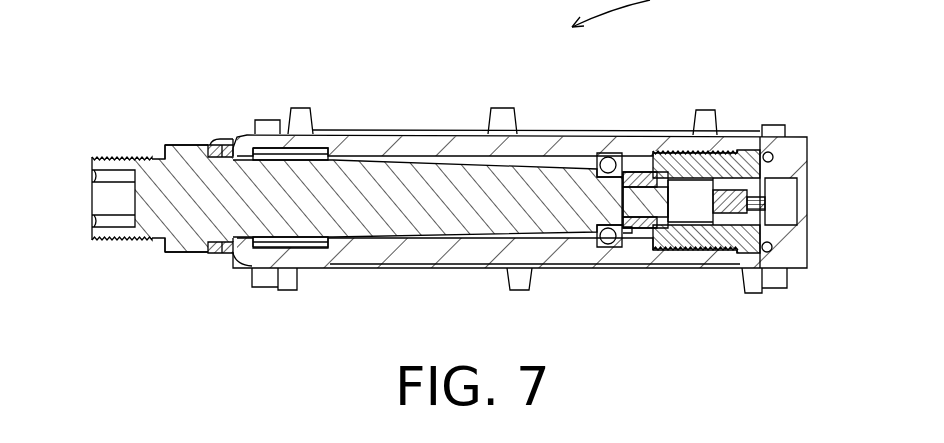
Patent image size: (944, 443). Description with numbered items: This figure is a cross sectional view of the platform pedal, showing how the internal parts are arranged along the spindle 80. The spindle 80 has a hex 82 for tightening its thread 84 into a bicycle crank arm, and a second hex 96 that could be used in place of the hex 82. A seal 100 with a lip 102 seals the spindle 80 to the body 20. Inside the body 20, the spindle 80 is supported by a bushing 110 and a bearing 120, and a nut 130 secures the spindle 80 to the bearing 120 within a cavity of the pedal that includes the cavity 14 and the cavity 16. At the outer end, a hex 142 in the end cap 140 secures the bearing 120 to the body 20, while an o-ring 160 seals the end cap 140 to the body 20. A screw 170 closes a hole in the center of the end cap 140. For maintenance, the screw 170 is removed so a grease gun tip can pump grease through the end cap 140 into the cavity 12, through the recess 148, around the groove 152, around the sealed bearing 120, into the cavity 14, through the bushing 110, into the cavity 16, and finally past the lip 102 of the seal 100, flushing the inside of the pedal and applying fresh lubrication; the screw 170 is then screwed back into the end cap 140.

The cavity 12 is at (693, 228).
The cavity 14 is at (515, 237).
The cavity 16 is at (247, 242).
The body 20 is at (443, 143).
The spindle 80 is at (137, 155).
The hex 82 is at (108, 200).
The thread 84 is at (132, 240).
The hex 96 is at (178, 253).
The seal 100 is at (215, 145).
The lip 102 is at (233, 140).
The bushing 110 is at (282, 155).
The bearing 120 is at (612, 153).
The nut 130 is at (645, 180).
The end cap 140 is at (703, 158).
The hex 142 is at (780, 207).
The recess 148 is at (636, 247).
The groove 152 is at (634, 249).
The o-ring 160 is at (770, 150).
The screw 170 is at (757, 192).